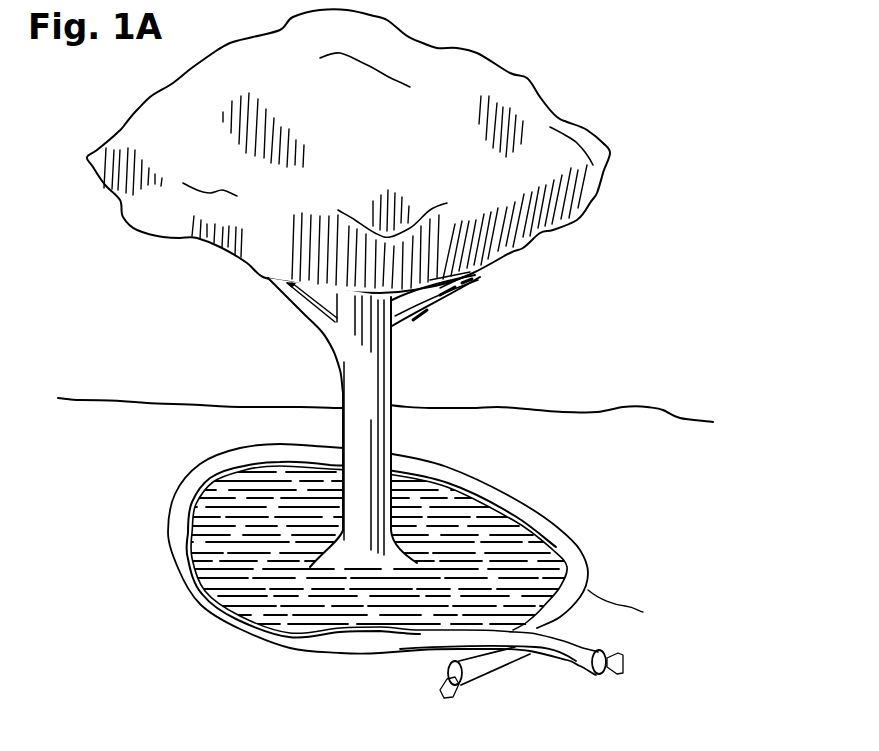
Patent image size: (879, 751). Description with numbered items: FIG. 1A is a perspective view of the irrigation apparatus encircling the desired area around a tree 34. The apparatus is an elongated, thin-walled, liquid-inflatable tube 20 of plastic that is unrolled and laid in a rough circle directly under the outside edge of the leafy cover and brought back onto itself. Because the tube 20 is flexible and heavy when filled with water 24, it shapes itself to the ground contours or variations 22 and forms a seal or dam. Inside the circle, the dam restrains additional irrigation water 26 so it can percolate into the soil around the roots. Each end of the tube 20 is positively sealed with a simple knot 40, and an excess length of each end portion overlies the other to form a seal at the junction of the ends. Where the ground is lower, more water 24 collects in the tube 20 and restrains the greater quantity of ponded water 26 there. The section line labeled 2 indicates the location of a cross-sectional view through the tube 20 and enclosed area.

The liquid-inflatable tube 20 is at (633, 609).
The ground contours or variations 22 is at (680, 418).
The water 24 is at (570, 547).
The irrigation water 26 is at (505, 592).
The tree 34 is at (370, 365).
The knot 40 is at (623, 663).
The section line for FIG. 2 is at (240, 551).